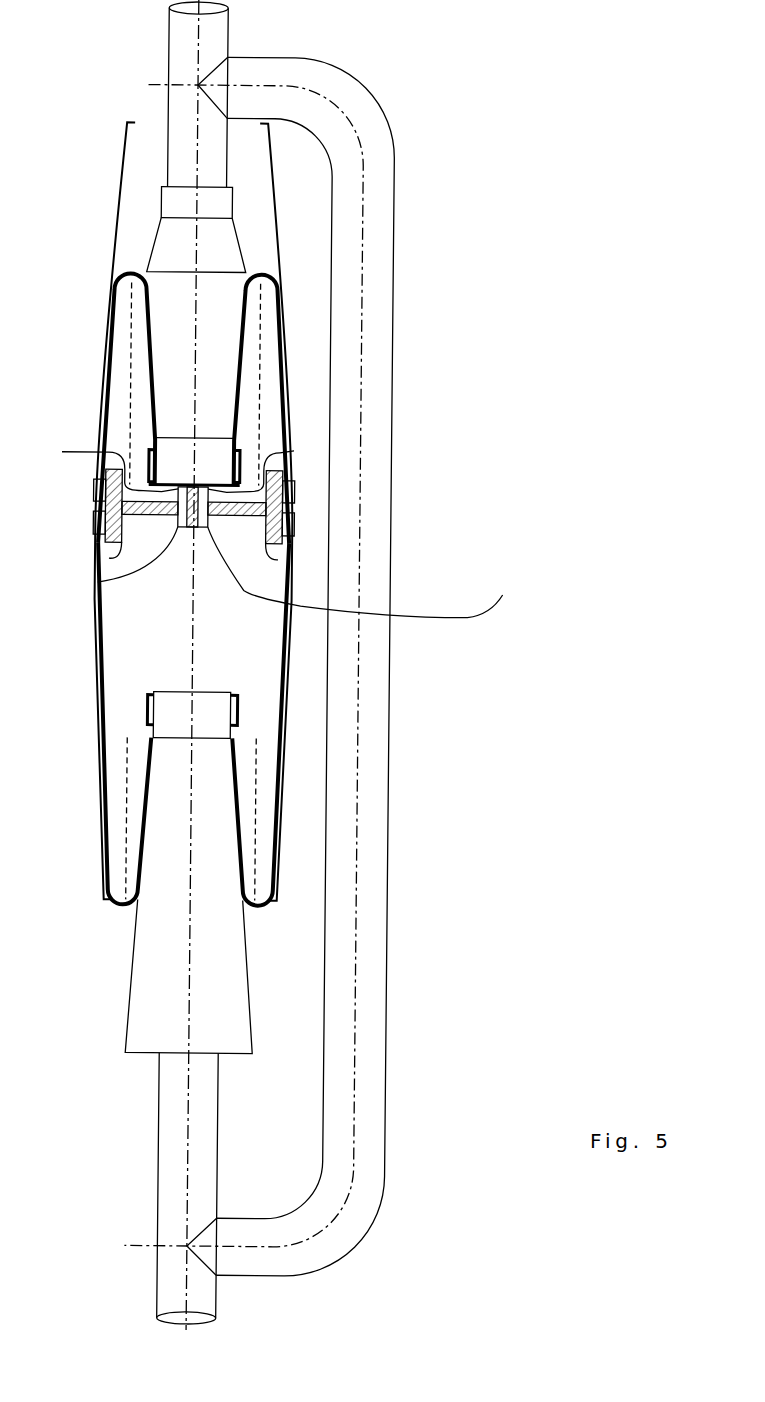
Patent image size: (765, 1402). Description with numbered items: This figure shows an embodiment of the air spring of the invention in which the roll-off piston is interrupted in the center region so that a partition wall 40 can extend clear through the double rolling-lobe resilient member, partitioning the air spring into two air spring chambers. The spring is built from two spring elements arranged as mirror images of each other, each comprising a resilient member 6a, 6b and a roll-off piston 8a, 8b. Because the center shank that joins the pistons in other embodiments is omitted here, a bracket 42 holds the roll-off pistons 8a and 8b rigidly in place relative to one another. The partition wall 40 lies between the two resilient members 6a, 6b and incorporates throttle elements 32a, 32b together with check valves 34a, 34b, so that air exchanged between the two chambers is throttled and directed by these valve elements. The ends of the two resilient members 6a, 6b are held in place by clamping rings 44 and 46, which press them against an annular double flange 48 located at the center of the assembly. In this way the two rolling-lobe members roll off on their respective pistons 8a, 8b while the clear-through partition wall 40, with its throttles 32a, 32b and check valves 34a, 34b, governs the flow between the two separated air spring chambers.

The roll-off piston 8a is at (224, 297).
The roll-off piston 8b is at (235, 977).
The bracket 42 is at (375, 303).
The resilient member 6a is at (280, 357).
The resilient member 6b is at (106, 800).
The check valve 34a is at (60, 453).
The check valve 34b is at (467, 615).
The throttle element 32a is at (97, 583).
The throttle element 32b is at (292, 450).
The clamping ring 44 is at (291, 493).
The clamping ring 46 is at (291, 523).
The partition wall 40 is at (291, 558).
The annular double flange 48 is at (95, 560).